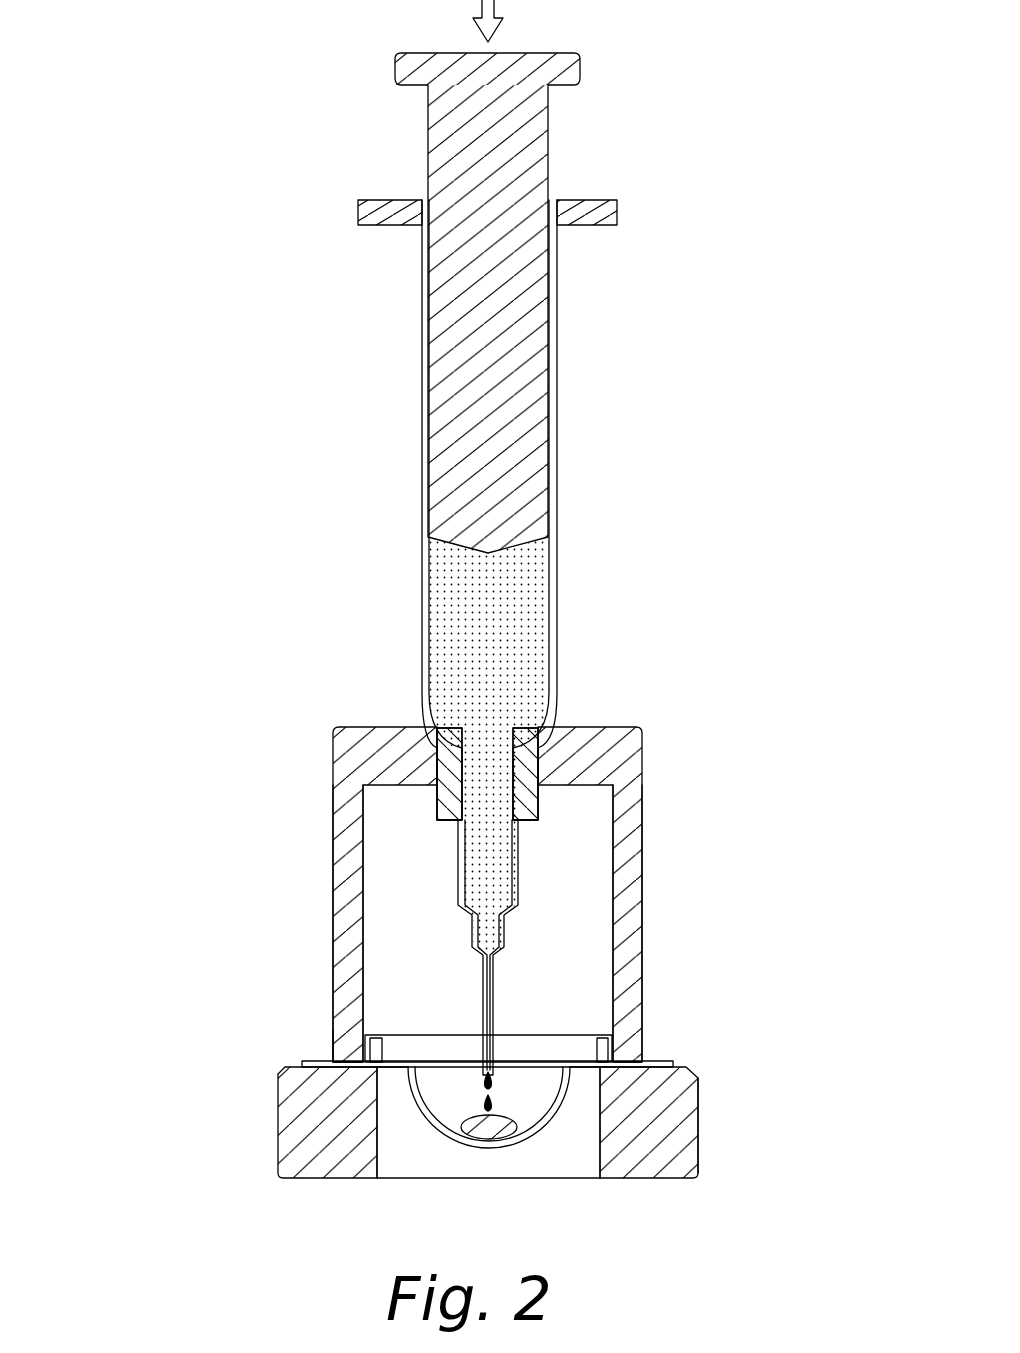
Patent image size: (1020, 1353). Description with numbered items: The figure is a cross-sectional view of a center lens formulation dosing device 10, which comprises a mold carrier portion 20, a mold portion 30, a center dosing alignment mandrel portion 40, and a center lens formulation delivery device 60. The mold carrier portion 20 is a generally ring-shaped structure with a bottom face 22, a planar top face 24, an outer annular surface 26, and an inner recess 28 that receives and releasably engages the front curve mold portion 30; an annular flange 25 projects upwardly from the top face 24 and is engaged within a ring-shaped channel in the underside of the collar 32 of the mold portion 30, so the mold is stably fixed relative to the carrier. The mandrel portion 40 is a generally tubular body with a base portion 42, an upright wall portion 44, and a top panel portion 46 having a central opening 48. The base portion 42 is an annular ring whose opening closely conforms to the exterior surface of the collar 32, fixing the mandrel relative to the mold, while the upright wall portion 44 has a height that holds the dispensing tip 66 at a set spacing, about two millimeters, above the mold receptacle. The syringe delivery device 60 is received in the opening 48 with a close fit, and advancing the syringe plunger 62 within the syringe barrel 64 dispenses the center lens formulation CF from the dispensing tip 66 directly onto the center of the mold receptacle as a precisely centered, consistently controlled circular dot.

The center lens formulation dosing device 10 is at (180, 430).
The mold carrier portion 20 is at (210, 1119).
The bottom face 22 is at (656, 1178).
The top face 24 is at (683, 1065).
The annular flange 25 is at (385, 1049).
The outer annular surface 26 is at (700, 1119).
The inner recess 28 is at (587, 1140).
The mold portion 30 is at (436, 1122).
The collar 32 is at (600, 1040).
The center dosing alignment mandrel portion 40 is at (258, 861).
The base portion 42 is at (340, 1036).
The upright wall portion 44 is at (634, 932).
The top panel portion 46 is at (595, 738).
The opening 48 is at (430, 792).
The center lens formulation delivery device 60 is at (613, 370).
The syringe plunger 62 is at (525, 150).
The syringe barrel 64 is at (428, 607).
The dispensing tip 66 is at (491, 1054).
The center lens formulation CF is at (499, 645).